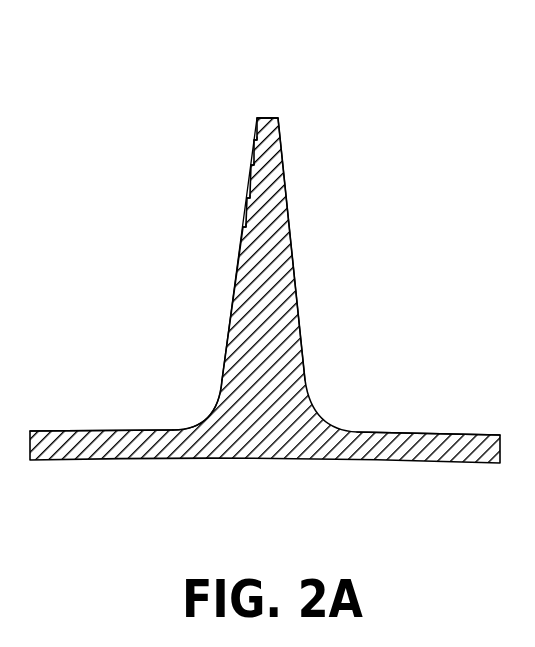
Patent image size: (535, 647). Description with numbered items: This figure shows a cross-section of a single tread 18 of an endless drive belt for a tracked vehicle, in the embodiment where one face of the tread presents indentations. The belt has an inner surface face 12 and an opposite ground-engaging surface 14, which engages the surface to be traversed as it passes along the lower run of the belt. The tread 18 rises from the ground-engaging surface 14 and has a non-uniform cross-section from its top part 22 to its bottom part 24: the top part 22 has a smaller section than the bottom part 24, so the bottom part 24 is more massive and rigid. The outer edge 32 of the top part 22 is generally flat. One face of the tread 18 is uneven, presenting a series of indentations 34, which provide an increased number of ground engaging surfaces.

The tread 18 is at (265, 265).
The inner surface face 12 is at (457, 463).
The ground-engaging surface 14 is at (461, 434).
The top part 22 is at (292, 126).
The outer edge 32 is at (265, 117).
The indentations 34 is at (245, 227).
The bottom part 24 is at (184, 413).